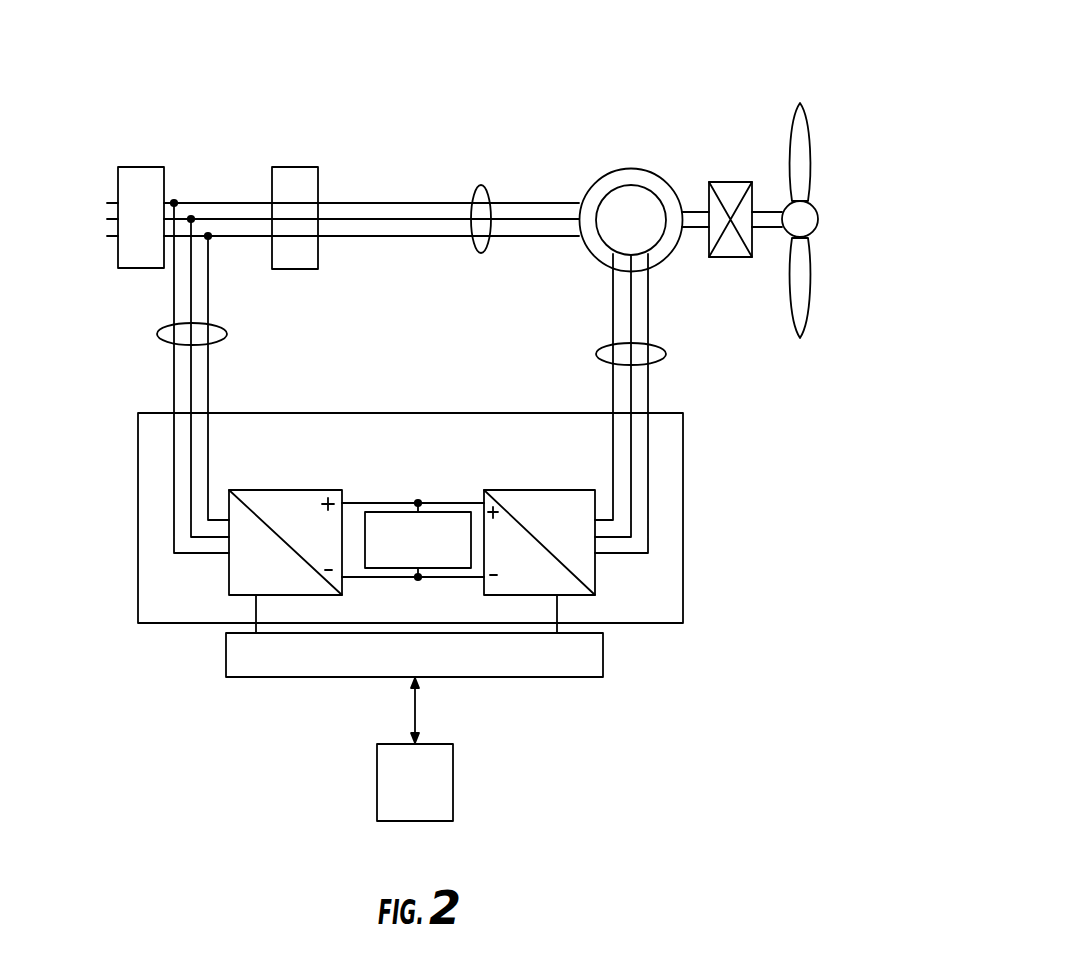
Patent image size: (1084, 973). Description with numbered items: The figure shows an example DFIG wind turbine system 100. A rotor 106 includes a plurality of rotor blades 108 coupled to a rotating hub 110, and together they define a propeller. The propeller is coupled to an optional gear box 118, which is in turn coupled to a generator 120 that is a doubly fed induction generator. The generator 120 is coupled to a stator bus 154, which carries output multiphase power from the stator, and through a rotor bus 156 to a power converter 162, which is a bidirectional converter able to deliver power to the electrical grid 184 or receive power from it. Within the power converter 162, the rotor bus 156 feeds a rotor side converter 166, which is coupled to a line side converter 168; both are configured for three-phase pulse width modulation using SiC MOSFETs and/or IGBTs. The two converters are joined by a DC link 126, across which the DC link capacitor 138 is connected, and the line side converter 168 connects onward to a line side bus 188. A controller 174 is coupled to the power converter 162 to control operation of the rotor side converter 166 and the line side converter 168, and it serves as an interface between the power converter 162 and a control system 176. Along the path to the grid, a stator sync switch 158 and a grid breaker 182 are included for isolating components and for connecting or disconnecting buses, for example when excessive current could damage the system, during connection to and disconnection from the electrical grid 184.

The DFIG wind turbine system 100 is at (680, 54).
The rotor 106 is at (848, 118).
The rotor blades 108 is at (810, 152).
The rotating hub 110 is at (818, 217).
The gear box 118 is at (723, 182).
The doubly fed induction generator (DFIG) 120 is at (632, 168).
The DC link 126 is at (390, 502).
The DC link capacitor 138 is at (447, 512).
The stator bus 154 is at (482, 187).
The rotor bus 156 is at (666, 354).
The stator sync switch 158 is at (295, 167).
The power converter 162 is at (683, 490).
The rotor side converter 166 is at (515, 490).
The line side converter 168 is at (292, 490).
The controller 174 is at (567, 678).
The control system 176 is at (453, 782).
The grid breaker 182 is at (137, 167).
The electrical grid 184 is at (97, 207).
The line side bus 188 is at (227, 335).